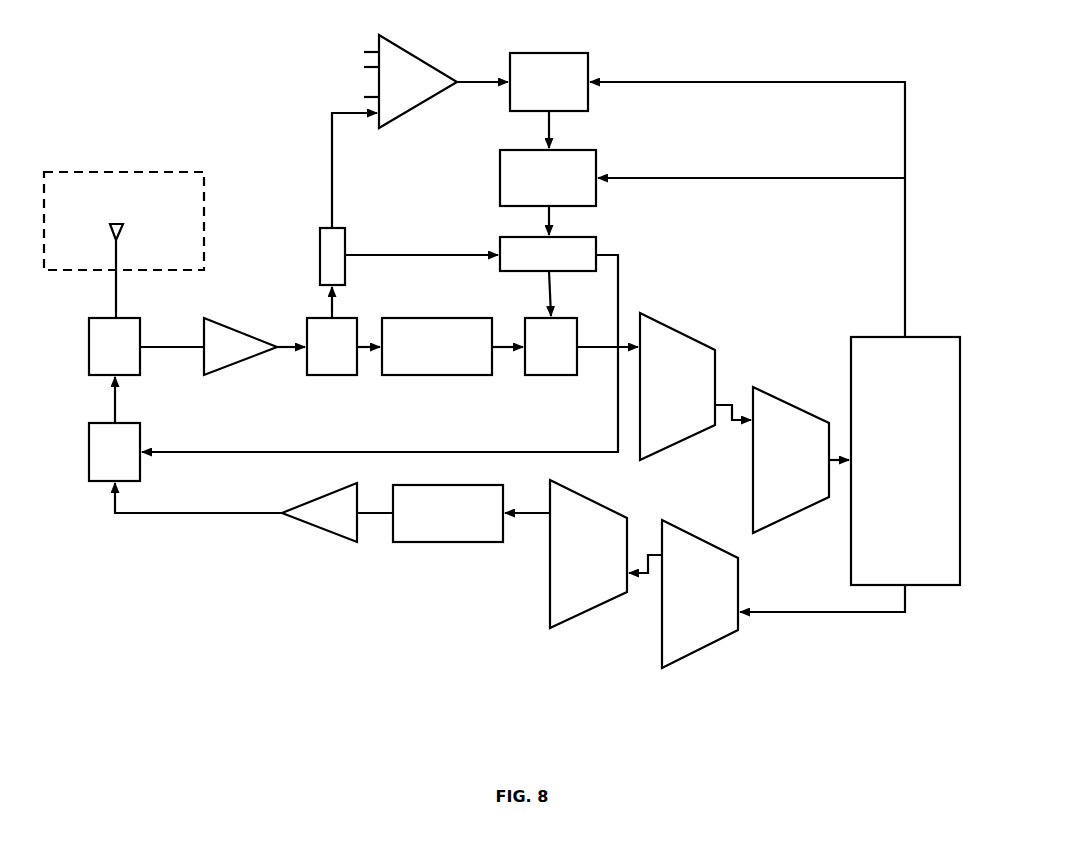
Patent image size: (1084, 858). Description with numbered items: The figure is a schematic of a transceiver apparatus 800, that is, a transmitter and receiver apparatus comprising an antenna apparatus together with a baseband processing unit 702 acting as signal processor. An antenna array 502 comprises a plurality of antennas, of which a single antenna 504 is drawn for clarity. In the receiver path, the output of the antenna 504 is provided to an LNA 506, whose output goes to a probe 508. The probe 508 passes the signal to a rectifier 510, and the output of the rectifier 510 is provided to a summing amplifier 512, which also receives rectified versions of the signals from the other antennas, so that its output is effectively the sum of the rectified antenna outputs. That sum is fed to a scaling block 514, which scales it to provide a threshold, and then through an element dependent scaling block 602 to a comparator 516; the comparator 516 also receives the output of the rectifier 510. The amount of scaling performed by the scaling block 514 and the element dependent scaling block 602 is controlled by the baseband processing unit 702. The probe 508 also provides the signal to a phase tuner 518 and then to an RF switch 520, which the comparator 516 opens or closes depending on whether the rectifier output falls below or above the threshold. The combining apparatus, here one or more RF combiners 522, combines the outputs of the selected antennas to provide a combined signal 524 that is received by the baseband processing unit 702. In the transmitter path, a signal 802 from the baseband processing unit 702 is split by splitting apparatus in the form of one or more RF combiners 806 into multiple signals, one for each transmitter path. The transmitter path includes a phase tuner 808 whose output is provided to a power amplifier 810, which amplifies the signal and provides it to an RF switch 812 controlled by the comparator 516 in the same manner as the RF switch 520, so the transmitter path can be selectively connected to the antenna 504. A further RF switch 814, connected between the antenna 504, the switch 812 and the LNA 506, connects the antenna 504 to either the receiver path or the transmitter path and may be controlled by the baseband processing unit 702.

The antenna array 502 is at (125, 172).
The antenna 504 is at (113, 232).
The LNA 506 is at (233, 366).
The probe 508 is at (333, 376).
The rectifier 510 is at (345, 257).
The summing amplifier 512 is at (412, 53).
The scaling block 514 is at (590, 63).
The comparator 516 is at (596, 240).
The phase tuner 518 is at (437, 376).
The RF switch 520 is at (540, 376).
The RF combiner 522 is at (665, 326).
The combined signal 524 is at (833, 472).
The element dependent scaling block 602 is at (596, 163).
The baseband processing unit 702 is at (873, 337).
The transceiver apparatus 800 is at (514, 754).
The signal 802 is at (770, 612).
The RF combiner 806 is at (582, 617).
The phase tuner 808 is at (440, 543).
The power amplifier 810 is at (353, 543).
The RF switch 812 is at (140, 432).
The RF switch 814 is at (140, 329).